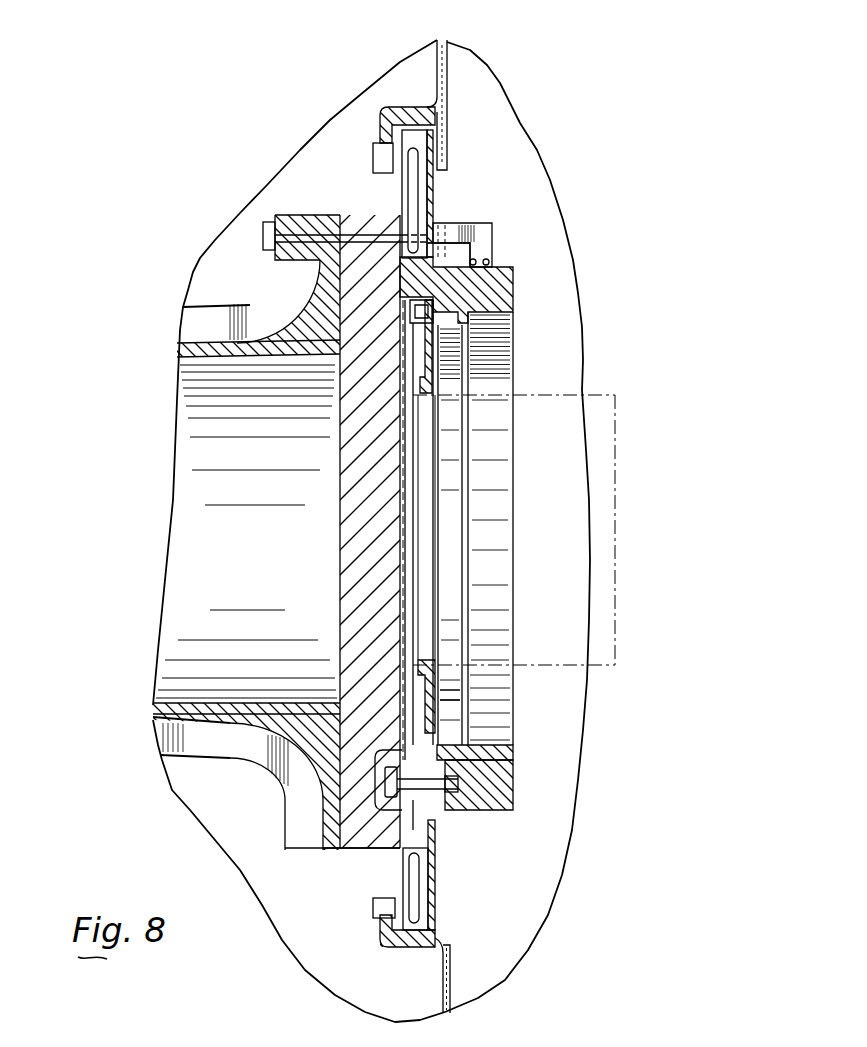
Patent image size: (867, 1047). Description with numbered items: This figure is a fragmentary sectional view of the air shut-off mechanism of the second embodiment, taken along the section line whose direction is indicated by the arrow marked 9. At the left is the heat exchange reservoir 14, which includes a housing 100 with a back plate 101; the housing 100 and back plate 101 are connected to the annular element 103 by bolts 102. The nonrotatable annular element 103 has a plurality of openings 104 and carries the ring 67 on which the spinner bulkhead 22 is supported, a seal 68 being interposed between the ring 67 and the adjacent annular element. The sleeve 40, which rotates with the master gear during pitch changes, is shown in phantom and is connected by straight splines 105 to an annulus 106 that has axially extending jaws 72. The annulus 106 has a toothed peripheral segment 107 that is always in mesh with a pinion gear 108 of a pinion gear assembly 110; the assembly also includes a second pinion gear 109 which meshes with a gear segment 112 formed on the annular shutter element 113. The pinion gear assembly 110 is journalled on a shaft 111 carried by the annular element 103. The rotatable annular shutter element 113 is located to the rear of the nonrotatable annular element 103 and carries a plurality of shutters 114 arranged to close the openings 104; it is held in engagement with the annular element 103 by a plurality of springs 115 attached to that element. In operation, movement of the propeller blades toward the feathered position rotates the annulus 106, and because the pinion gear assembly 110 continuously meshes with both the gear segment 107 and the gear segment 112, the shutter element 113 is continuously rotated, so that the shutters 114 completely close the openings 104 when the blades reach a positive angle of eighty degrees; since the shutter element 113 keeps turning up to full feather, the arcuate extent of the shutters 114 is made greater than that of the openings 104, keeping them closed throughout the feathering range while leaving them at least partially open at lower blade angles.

The heat exchange reservoir 14 is at (197, 306).
The spinner bulkhead 22 is at (448, 63).
The ring 67 is at (398, 112).
The seal 68 is at (380, 912).
The axially extending jaws 72 is at (445, 705).
The Figure 9 is at (660, 522).
The sleeve 40 is at (600, 667).
The housing 100 is at (273, 343).
The back plate 101 is at (363, 530).
The bolts 102 is at (303, 233).
The annular element 103 is at (490, 277).
The openings 104 is at (420, 185).
The straight splines 105 is at (425, 660).
The annulus 106 is at (433, 357).
The toothed peripheral segment 107 is at (437, 737).
The pinion gear 108 is at (433, 848).
The second pinion gear 109 is at (437, 815).
The pinion gear assembly 110 is at (433, 813).
The shaft 111 is at (447, 783).
The gear segment 112 is at (373, 848).
The annular shutter element 113 is at (437, 890).
The shutters 114 is at (433, 197).
The springs 115 is at (487, 237).